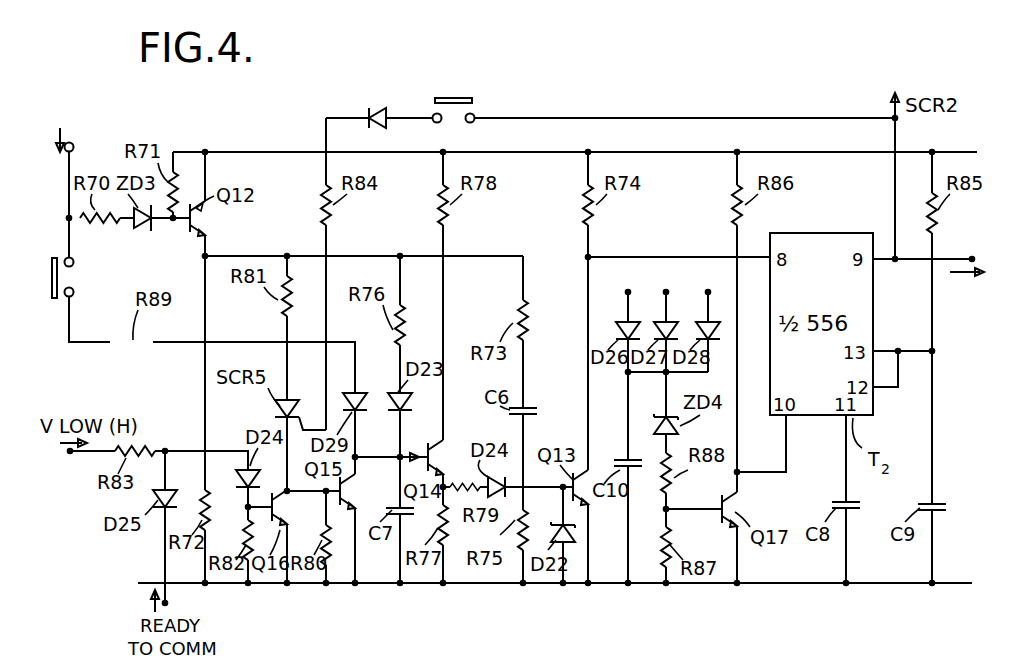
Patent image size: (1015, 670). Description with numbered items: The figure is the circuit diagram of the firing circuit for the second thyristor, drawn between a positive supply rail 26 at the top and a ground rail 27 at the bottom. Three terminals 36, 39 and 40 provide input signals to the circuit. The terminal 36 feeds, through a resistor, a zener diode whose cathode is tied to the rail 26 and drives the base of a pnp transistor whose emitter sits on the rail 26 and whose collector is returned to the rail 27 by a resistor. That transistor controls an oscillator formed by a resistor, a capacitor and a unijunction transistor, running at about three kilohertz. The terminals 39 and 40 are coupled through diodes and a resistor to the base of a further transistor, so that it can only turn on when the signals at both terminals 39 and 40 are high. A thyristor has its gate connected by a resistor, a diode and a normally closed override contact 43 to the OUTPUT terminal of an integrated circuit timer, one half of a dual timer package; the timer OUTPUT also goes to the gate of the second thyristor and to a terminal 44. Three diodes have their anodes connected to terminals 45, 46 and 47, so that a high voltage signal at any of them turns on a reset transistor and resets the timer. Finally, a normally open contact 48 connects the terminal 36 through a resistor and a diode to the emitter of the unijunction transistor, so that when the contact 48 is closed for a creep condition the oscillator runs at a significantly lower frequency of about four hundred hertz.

The rail 26 is at (250, 152).
The rail 27 is at (358, 588).
The terminal 36 is at (74, 149).
The terminal 39 is at (178, 600).
The terminal 40 is at (70, 458).
The normally closed override contact 43 is at (470, 101).
The terminal 44 is at (942, 262).
The terminal 45 is at (626, 290).
The terminal 46 is at (664, 290).
The terminal 47 is at (706, 290).
The normally open contact 48 is at (100, 266).